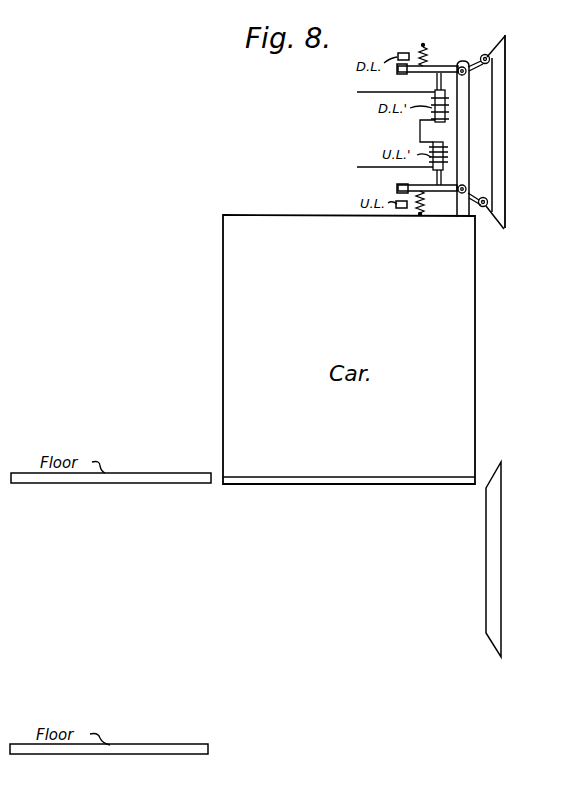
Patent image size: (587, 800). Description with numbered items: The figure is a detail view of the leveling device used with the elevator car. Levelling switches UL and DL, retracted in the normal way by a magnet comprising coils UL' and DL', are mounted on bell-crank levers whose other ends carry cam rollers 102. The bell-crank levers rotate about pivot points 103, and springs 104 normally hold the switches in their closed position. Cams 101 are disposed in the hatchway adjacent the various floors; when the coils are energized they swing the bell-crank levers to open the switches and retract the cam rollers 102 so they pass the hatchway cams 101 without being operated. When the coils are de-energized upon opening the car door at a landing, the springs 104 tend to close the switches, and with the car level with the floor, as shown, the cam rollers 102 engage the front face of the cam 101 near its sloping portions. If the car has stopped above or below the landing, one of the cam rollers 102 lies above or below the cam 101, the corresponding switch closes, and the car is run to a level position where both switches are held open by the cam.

The cam 101 is at (497, 88).
The cam roller 102 is at (497, 66).
The pivot point 103 is at (466, 62).
The spring 104 is at (436, 34).